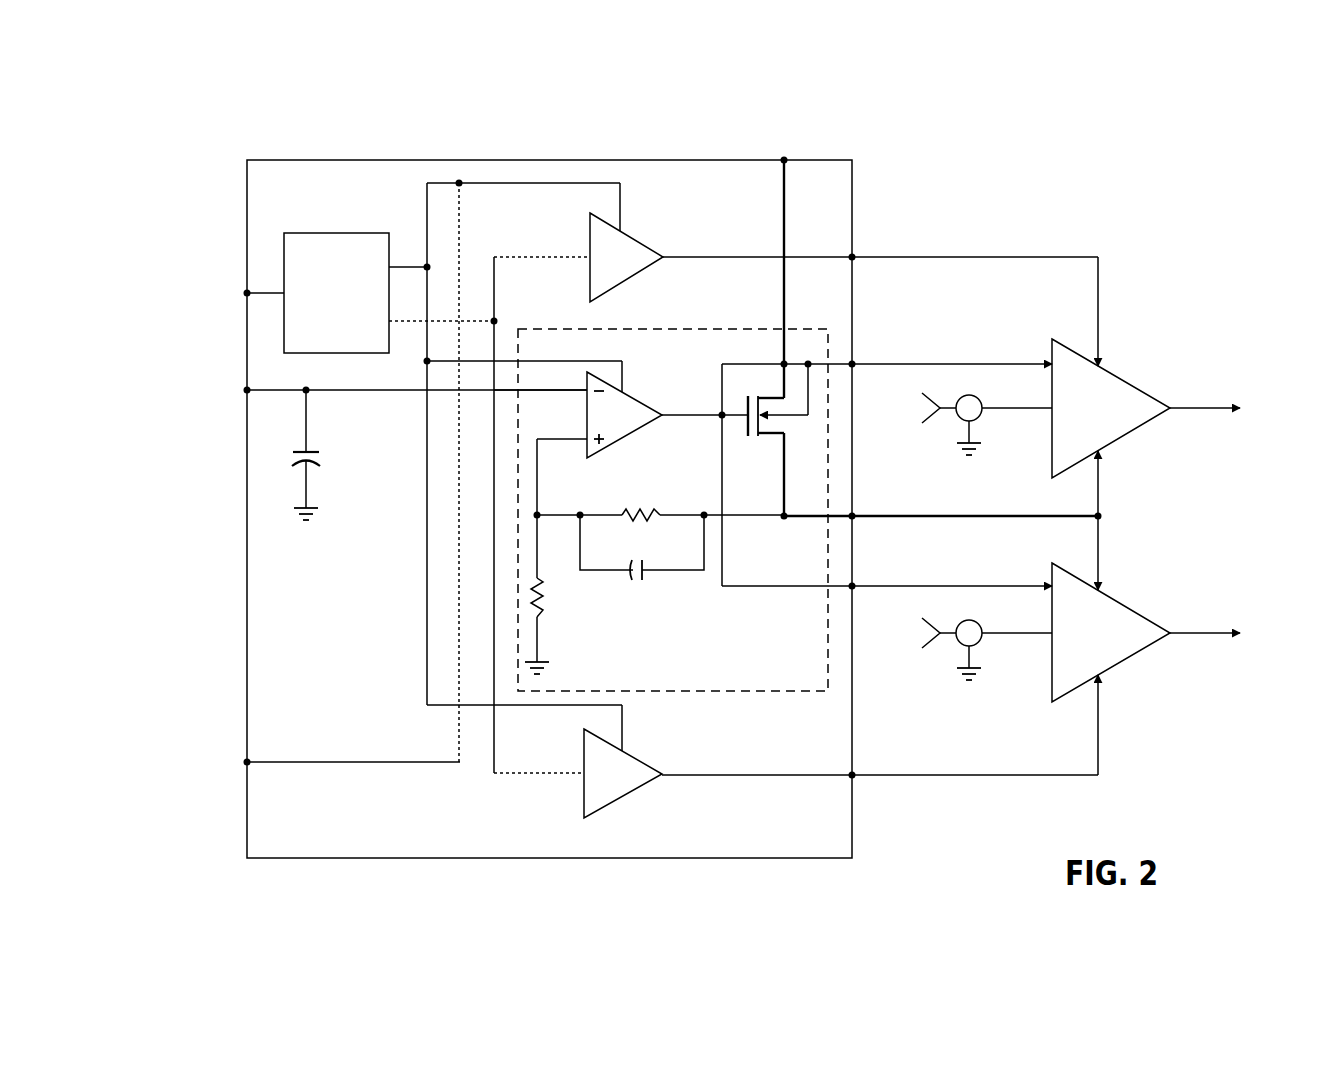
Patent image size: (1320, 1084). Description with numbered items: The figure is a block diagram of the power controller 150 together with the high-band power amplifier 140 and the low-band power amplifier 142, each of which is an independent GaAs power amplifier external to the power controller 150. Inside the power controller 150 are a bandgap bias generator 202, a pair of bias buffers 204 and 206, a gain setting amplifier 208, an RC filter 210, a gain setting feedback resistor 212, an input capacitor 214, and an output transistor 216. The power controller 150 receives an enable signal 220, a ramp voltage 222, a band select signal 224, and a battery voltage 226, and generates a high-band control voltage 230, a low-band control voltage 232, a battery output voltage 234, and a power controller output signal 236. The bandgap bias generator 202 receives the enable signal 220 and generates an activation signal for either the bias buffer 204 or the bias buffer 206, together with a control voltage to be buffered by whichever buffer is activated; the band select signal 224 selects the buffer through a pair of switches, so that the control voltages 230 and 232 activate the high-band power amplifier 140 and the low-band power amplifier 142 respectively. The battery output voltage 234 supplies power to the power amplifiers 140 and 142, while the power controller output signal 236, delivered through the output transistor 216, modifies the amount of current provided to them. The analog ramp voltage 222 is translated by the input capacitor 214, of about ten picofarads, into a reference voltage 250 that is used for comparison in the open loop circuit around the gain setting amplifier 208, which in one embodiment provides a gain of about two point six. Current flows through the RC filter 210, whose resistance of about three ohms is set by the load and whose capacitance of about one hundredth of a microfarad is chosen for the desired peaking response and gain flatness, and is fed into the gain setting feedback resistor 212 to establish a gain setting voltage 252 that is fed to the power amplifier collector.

The high-band power amplifier 140 is at (1138, 380).
The low-band power amplifier 142 is at (1133, 607).
The power controller 150 is at (285, 858).
The bandgap bias generator 202 is at (318, 233).
The bias buffer 204 is at (640, 243).
The bias buffer 206 is at (625, 792).
The gain setting amplifier 208 is at (630, 433).
The RC filter 210 is at (661, 595).
The gain setting feedback resistor 212 is at (546, 600).
The input capacitor 214 is at (312, 452).
The output transistor 216 is at (764, 434).
The enable signal 220 is at (247, 293).
The ramp voltage 222 is at (247, 390).
The band select signal 224 is at (247, 762).
The battery voltage 226 is at (784, 160).
The high-band control voltage 230 is at (852, 257).
The low-band control voltage 232 is at (852, 775).
The battery output voltage 234 is at (852, 364).
The power controller output signal 236 is at (852, 516).
The reference voltage 250 is at (553, 391).
The gain setting voltage 252 is at (569, 441).